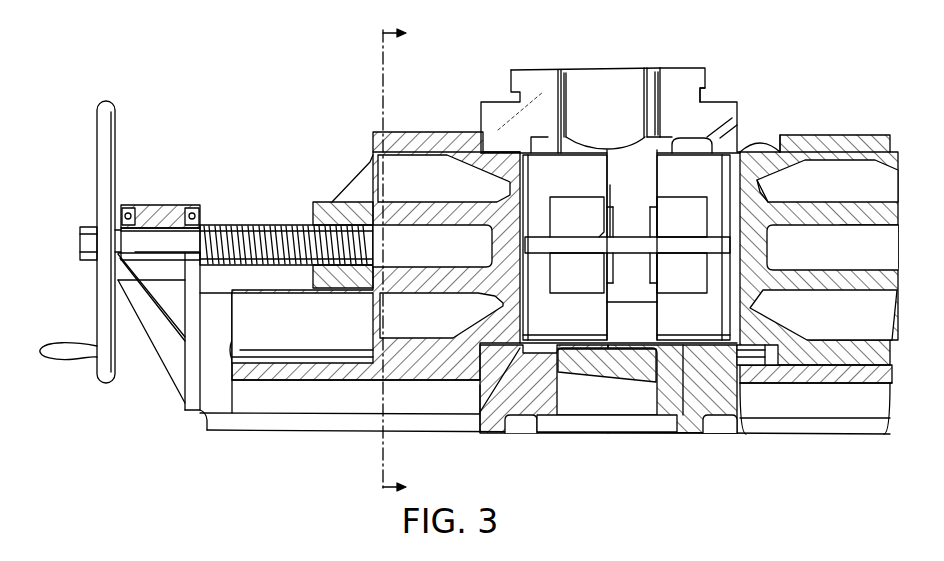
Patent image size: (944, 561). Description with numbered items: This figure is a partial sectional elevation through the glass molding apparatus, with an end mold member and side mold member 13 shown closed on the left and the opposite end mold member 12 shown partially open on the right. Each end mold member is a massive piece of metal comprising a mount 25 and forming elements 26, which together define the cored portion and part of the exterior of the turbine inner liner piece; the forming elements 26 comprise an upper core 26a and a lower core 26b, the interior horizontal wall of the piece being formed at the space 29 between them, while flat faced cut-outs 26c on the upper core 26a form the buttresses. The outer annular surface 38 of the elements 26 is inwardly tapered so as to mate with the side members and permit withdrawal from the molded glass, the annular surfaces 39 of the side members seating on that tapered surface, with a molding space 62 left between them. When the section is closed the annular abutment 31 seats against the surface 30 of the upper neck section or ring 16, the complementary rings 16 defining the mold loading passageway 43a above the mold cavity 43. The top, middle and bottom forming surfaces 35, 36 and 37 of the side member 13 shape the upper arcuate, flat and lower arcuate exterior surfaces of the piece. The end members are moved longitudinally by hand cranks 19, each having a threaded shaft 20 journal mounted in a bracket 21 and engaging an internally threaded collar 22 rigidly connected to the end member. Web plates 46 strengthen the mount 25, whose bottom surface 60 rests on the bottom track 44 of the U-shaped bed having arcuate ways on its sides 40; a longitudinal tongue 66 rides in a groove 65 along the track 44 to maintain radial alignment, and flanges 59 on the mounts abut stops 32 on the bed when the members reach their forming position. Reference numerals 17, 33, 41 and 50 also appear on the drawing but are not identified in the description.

The end mold member 12 is at (736, 172).
The side mold member 13 is at (602, 69).
The upper ring 16 is at (690, 69).
The notch 17 is at (720, 92).
The hand crank 19 is at (108, 131).
The threaded shaft 20 is at (280, 224).
The bracket 21 is at (170, 204).
The internally threaded collar 22 is at (315, 201).
The mount 25 is at (417, 185).
The forming elements 26 is at (585, 187).
The upper core element 26a is at (597, 200).
The lower core element 26b is at (572, 312).
The flat faced cut-outs 26c is at (604, 240).
The space 29 is at (445, 256).
The surface 30 is at (764, 186).
The annular abutment 31 is at (803, 130).
The stops 32 is at (493, 350).
The nut 33 is at (608, 402).
The top side forming surface 35 is at (639, 198).
The middle side forming surface 36 is at (639, 270).
The bottom side forming surface 37 is at (639, 324).
The outer annular surface 38 is at (503, 122).
The annular surface 39 is at (502, 120).
The sides 40 is at (315, 362).
The jaw face 41 is at (537, 247).
The mold cavity 43 is at (651, 72).
The mold loading passageway 43a is at (605, 112).
The bottom track 44 is at (253, 351).
The web plates 46 is at (360, 167).
The bracket 50 is at (147, 345).
The flanges 59 is at (457, 420).
The bottom surface 60 is at (405, 395).
The molding space 62 is at (548, 140).
The groove 65 is at (862, 318).
The longitudinal tongue 66 is at (427, 358).